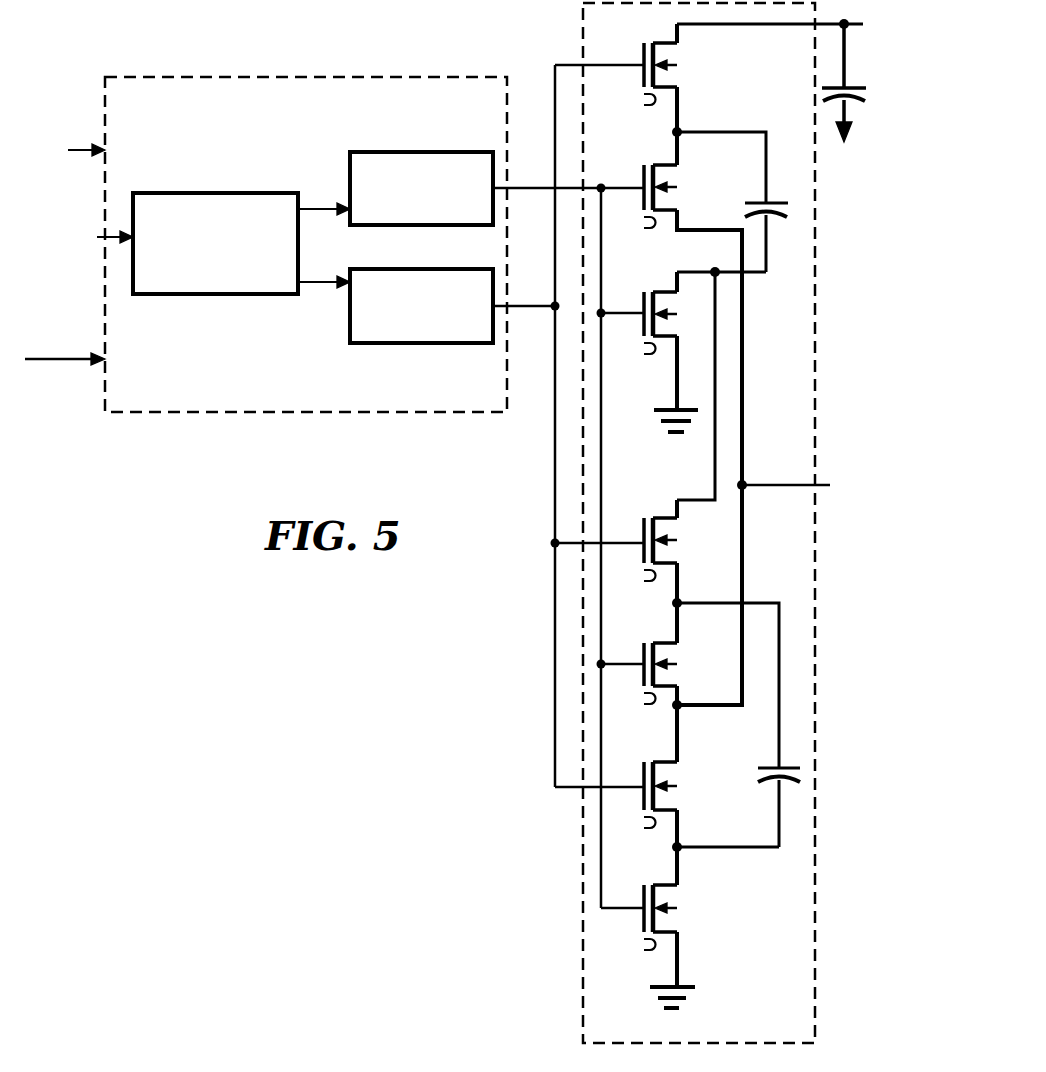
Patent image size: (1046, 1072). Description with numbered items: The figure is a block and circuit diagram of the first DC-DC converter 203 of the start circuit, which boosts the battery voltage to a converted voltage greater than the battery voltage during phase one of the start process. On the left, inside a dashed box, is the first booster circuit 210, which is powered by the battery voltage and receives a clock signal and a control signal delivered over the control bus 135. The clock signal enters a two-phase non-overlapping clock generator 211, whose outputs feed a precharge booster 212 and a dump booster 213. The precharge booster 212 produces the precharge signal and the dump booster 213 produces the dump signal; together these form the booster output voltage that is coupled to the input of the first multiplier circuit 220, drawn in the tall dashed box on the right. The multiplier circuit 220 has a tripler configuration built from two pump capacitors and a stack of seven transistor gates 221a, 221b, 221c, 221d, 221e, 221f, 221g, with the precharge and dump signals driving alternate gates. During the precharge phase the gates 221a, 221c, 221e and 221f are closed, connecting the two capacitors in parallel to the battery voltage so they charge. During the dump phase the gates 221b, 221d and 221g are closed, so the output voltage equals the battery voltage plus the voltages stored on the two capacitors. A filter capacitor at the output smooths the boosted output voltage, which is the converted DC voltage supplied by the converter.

The first DC-DC converter 203 is at (126, 31).
The first booster circuit 210 is at (117, 124).
The two-phase non-overlapping clock generator 211 is at (205, 193).
The precharge booster 212 is at (373, 152).
The dump booster 213 is at (368, 343).
The control bus 135 is at (67, 363).
The first VIND Multiplier-1 circuit 220 is at (802, 72).
The gate 221a is at (643, 933).
The gate 221b is at (643, 811).
The gate 221c is at (643, 687).
The gate 221d is at (643, 564).
The gate 221e is at (643, 337).
The gate 221f is at (643, 211).
The gate 221g is at (643, 88).